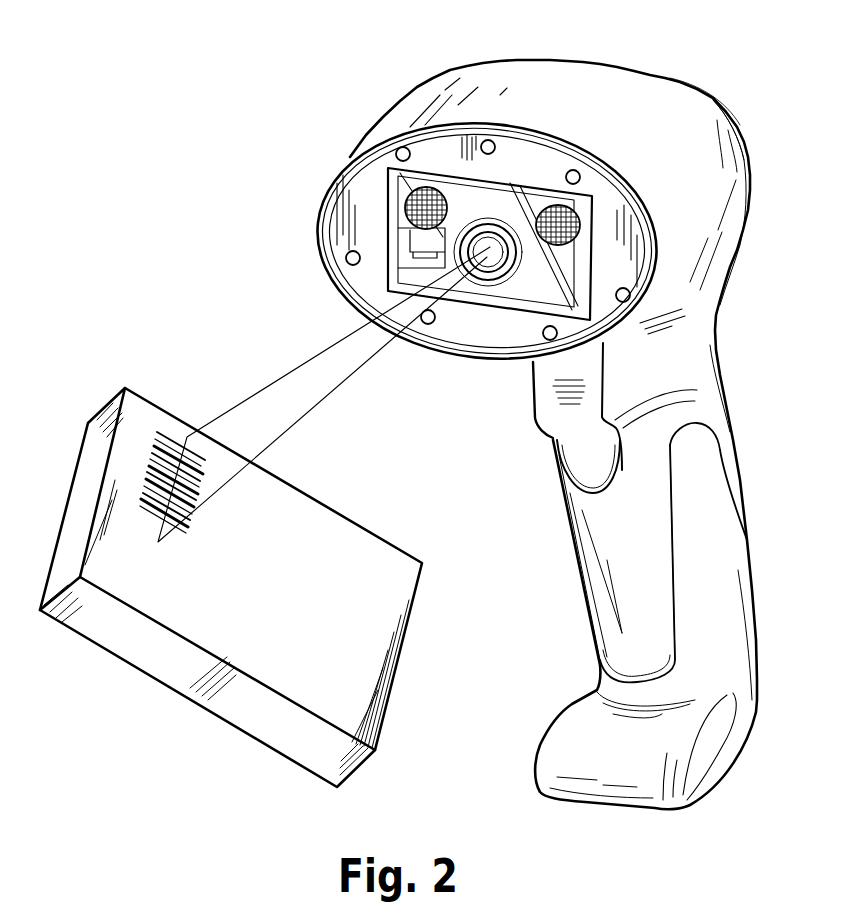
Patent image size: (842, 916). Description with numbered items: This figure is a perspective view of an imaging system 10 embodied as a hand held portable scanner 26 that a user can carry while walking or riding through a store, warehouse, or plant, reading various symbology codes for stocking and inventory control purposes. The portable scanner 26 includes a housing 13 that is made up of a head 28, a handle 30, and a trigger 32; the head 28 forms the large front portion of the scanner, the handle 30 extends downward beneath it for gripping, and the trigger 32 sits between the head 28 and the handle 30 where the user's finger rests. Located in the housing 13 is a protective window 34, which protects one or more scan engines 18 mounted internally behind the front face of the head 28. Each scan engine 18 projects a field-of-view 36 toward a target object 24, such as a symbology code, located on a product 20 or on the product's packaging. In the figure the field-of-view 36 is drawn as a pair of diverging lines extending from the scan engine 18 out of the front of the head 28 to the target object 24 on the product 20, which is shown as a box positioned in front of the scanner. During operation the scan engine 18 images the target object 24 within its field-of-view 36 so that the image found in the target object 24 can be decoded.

The imaging system 10 is at (541, 47).
The housing 13 is at (698, 225).
The scan engine 18 is at (497, 210).
The product 20 is at (273, 716).
The target object 24 is at (172, 452).
The portable scanner 26 is at (712, 84).
The head 28 is at (670, 147).
The handle 30 is at (720, 570).
The trigger 32 is at (556, 407).
The protective window 34 is at (405, 206).
The field-of-view 36 is at (285, 430).